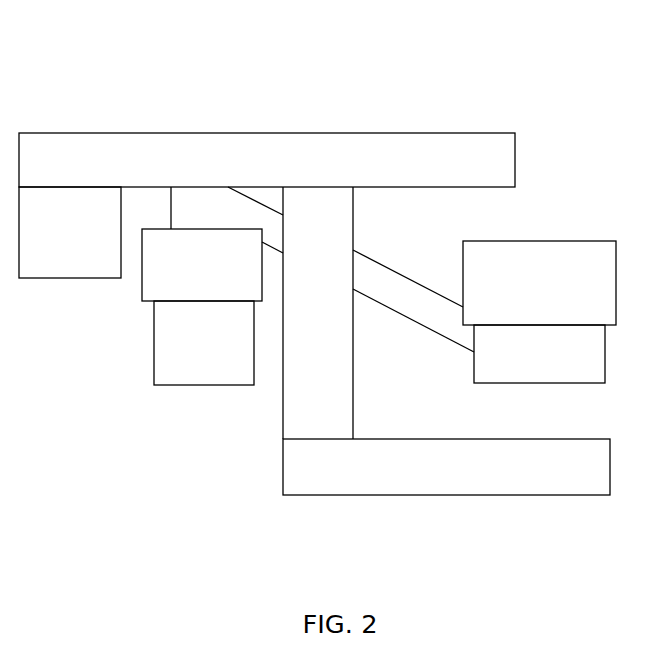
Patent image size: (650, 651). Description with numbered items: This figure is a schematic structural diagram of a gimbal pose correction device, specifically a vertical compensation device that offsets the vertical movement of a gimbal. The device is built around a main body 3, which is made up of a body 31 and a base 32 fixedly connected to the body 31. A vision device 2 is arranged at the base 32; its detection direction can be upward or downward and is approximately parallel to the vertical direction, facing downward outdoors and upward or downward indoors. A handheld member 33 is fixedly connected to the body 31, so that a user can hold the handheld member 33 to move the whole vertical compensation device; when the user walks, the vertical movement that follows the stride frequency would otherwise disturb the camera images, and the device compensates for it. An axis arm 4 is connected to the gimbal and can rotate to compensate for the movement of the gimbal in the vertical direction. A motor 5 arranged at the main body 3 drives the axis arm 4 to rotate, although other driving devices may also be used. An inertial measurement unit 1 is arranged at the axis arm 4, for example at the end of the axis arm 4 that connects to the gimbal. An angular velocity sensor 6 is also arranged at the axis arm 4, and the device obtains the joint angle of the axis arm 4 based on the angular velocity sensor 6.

The main body 3 is at (237, 73).
The base 32 is at (298, 144).
The body 31 is at (308, 367).
The handheld member 33 is at (483, 469).
The axis arm 4 is at (373, 272).
The vision device 2 is at (70, 232).
The inertial measurement unit (IMU) 1 is at (202, 244).
The angular velocity sensor 6 is at (539, 283).
The motor 5 is at (539, 354).